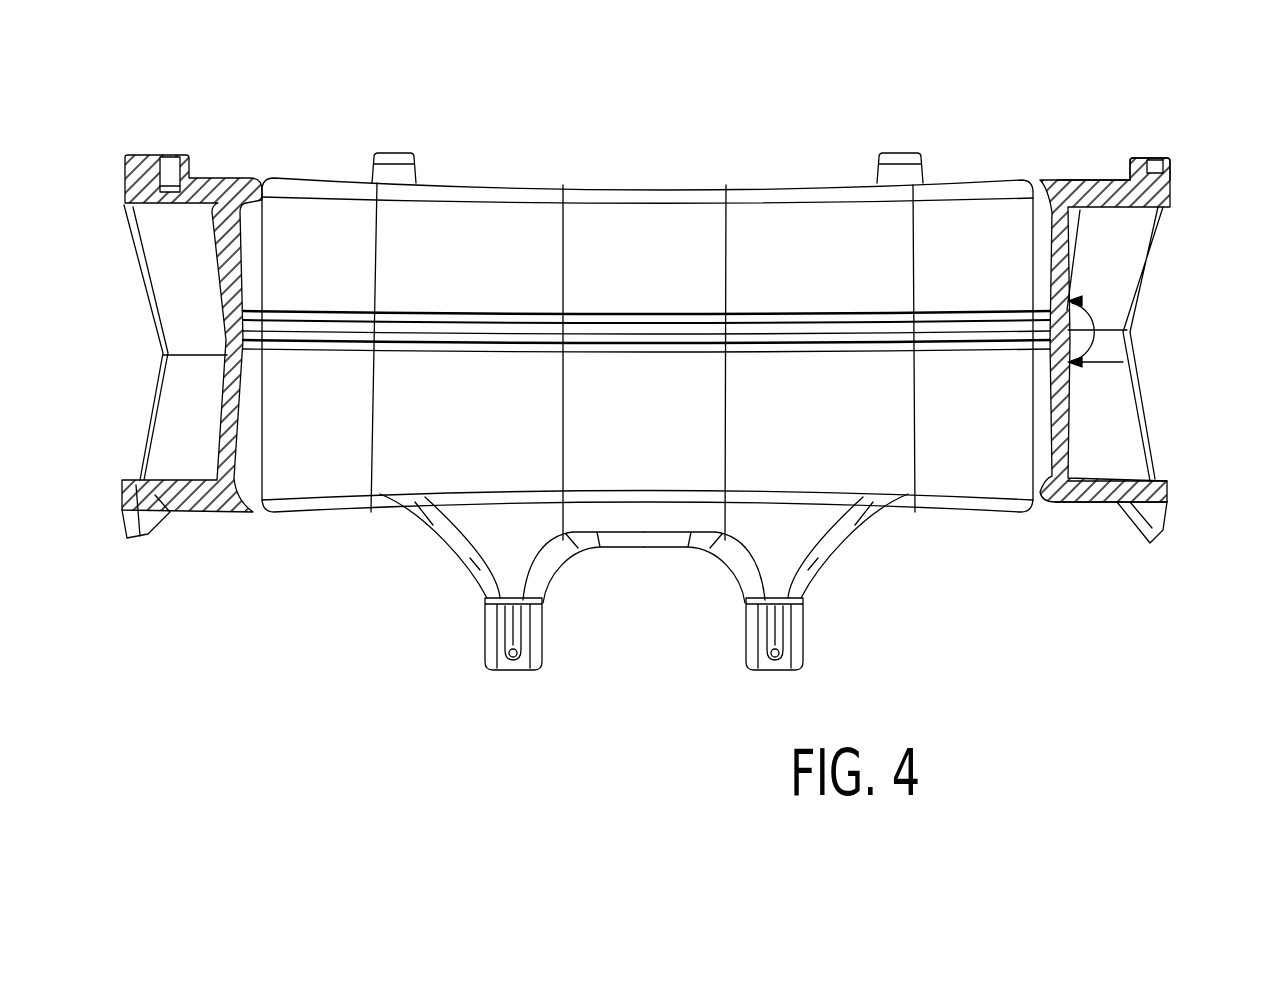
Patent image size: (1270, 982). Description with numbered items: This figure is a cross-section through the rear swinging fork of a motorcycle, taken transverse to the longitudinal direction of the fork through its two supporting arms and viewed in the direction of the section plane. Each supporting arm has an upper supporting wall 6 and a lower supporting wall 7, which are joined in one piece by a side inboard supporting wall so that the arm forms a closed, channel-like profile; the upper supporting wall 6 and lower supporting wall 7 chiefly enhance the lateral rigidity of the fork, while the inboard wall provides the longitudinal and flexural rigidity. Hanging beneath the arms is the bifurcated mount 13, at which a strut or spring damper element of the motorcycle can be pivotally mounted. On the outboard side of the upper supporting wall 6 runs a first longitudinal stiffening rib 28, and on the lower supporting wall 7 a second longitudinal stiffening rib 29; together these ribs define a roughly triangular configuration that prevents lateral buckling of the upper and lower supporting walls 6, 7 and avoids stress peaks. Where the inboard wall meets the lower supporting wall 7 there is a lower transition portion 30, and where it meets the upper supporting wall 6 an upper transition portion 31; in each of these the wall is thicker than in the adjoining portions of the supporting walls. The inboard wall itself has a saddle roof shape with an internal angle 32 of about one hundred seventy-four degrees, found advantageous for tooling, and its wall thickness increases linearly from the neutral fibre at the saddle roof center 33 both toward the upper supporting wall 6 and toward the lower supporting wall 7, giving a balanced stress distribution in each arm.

The upper supporting wall 6 is at (1110, 180).
The lower supporting wall 7 is at (1085, 508).
The bifurcated mount 13 is at (747, 620).
The first longitudinal stiffening rib 28 is at (1160, 168).
The second longitudinal stiffening rib 29 is at (1150, 522).
The lower transition portion 30 is at (1068, 515).
The upper transition portion 31 is at (1093, 193).
The internal angle 32 is at (1092, 310).
The saddle roof center 33 is at (1097, 350).